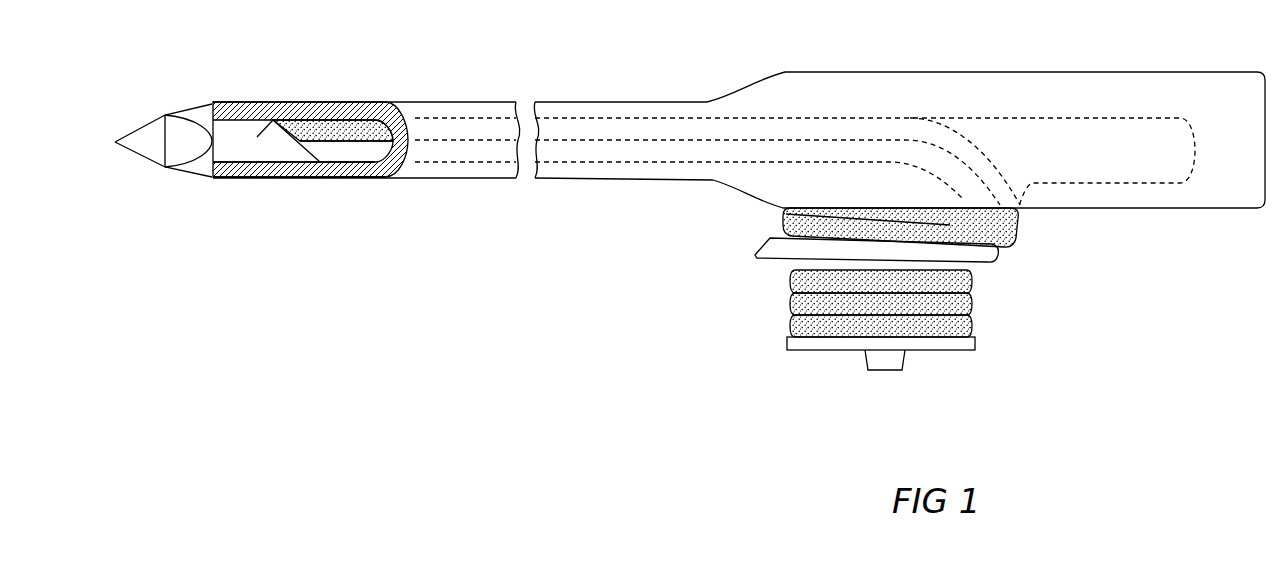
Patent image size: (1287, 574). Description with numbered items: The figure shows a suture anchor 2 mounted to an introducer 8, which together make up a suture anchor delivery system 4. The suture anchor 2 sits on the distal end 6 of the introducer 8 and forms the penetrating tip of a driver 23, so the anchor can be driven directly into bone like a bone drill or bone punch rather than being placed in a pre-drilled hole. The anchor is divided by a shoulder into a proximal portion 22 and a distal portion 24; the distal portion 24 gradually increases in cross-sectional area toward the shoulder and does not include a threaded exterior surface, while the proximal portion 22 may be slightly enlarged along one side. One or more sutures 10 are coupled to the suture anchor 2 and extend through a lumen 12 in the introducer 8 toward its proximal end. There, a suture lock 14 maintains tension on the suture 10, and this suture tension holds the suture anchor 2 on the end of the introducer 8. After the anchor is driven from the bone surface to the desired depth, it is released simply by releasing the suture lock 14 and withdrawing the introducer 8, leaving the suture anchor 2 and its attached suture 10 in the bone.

The suture anchor 2 is at (193, 169).
The distal portion 24 is at (190, 112).
The suture anchor delivery system 4 is at (420, 103).
The distal end 6 is at (222, 100).
The driver 23 is at (263, 180).
The lumen 12 is at (360, 170).
The suture 10 is at (330, 137).
The proximal portion 22 is at (281, 118).
The introducer 8 is at (823, 78).
The suture lock 14 is at (973, 272).